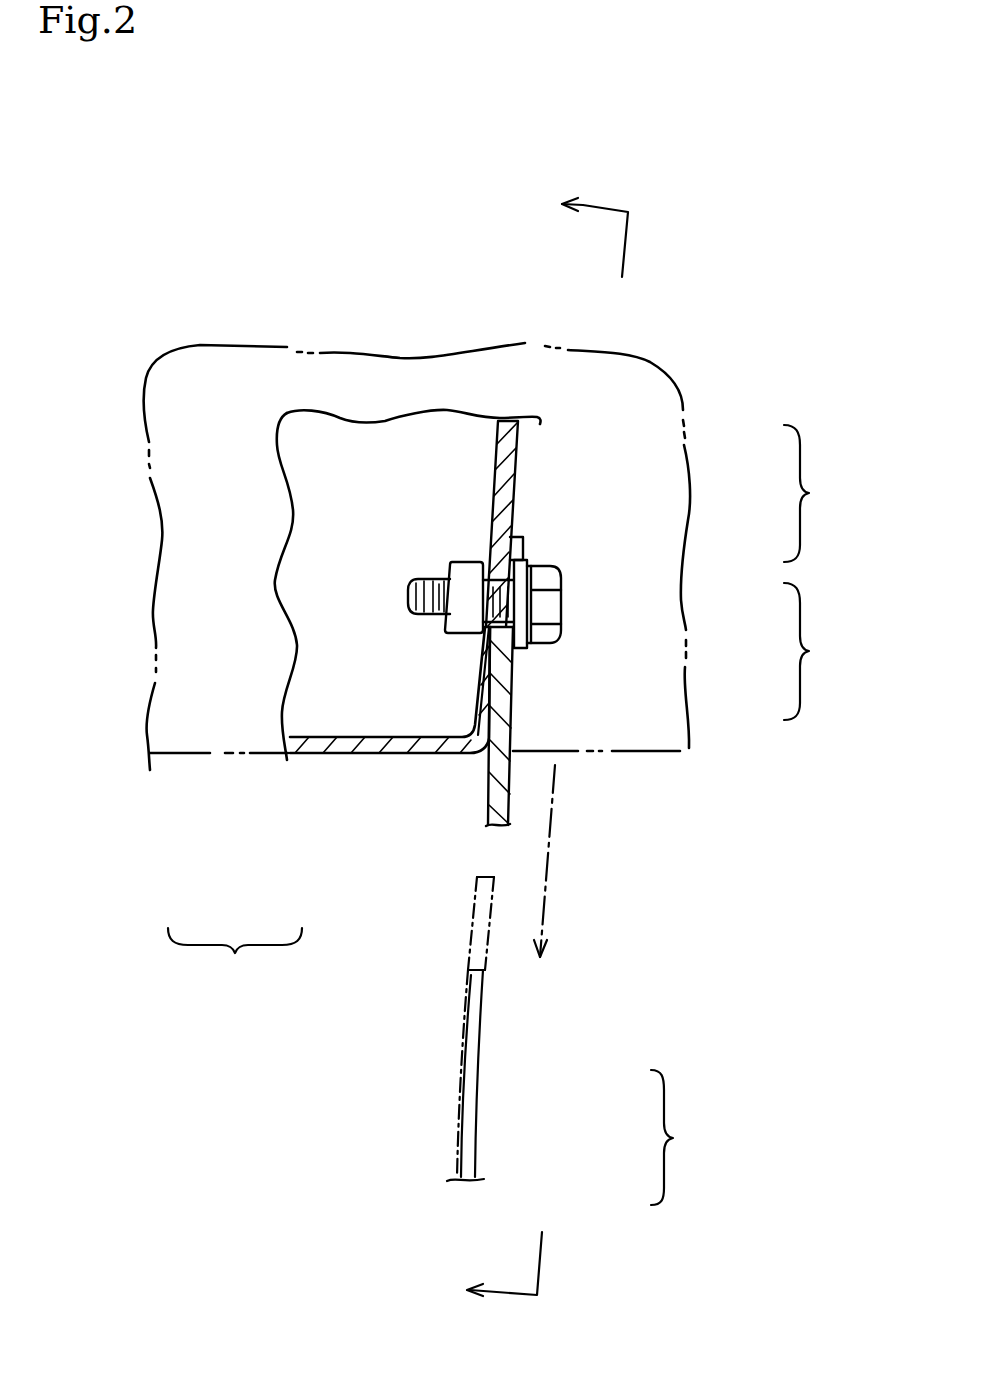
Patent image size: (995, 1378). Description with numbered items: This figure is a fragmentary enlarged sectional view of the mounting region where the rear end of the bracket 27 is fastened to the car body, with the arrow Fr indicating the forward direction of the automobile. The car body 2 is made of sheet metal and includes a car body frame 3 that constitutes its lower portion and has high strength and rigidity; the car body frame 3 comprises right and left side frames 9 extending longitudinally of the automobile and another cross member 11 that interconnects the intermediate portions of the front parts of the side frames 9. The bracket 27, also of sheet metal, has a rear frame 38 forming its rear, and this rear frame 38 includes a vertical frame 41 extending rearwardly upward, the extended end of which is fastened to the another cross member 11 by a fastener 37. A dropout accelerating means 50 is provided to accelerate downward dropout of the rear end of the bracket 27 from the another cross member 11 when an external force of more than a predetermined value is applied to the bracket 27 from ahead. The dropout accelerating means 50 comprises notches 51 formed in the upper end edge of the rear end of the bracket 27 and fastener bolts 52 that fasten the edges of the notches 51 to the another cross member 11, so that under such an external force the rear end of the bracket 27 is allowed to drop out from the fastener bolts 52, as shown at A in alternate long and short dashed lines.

The car body 2 is at (220, 315).
The car body frame 3 is at (398, 756).
The side frame 9 is at (208, 753).
The another cross member 11 is at (363, 753).
The bracket 27 is at (754, 894).
The fastener 37 is at (468, 557).
The rear frame 38 is at (517, 678).
The vertical frame 41 is at (513, 733).
The dropout accelerating means 50 is at (820, 493).
The notch 51 is at (522, 541).
The fastener bolt 52 is at (543, 607).
The dropout position A is at (547, 897).
The front direction Fr is at (25, 555).